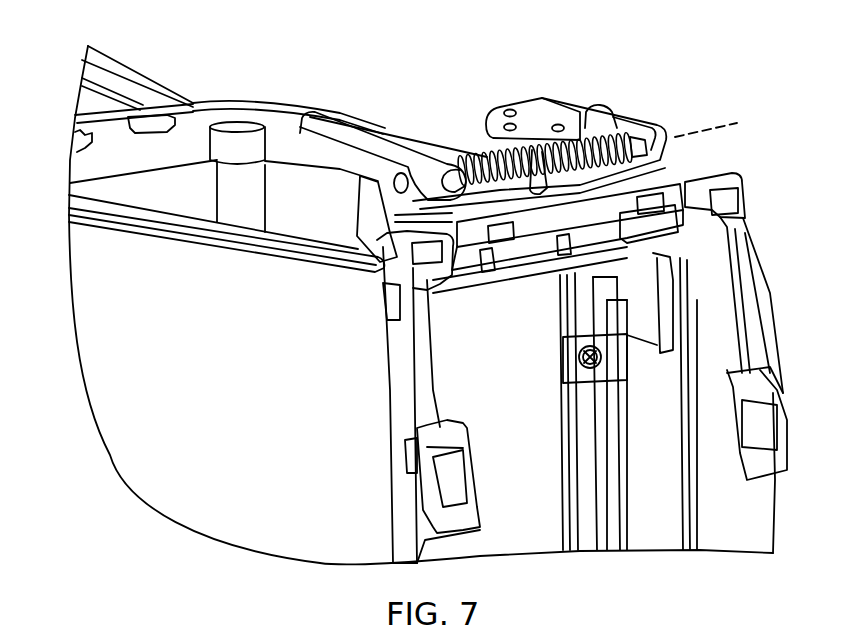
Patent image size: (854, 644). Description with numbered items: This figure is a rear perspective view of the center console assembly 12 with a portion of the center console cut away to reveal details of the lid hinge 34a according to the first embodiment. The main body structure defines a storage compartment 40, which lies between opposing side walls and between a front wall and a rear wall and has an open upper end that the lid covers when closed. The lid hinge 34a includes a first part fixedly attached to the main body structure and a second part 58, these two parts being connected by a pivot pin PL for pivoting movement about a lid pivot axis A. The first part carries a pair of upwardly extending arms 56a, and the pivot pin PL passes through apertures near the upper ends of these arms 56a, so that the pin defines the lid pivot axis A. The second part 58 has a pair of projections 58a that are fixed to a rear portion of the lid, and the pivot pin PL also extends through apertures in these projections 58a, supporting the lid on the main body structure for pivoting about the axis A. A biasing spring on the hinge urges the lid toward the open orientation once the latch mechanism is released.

The vehicle seat assembly 12 is at (462, 30).
The storage compartment 40 is at (187, 180).
The upwardly extending arms 56a is at (370, 223).
The projections 58a is at (322, 137).
The mounting plate 34a is at (610, 130).
The spring load point PL is at (528, 150).
The lid pivot axis A is at (723, 123).
The second part 58 is at (533, 224).